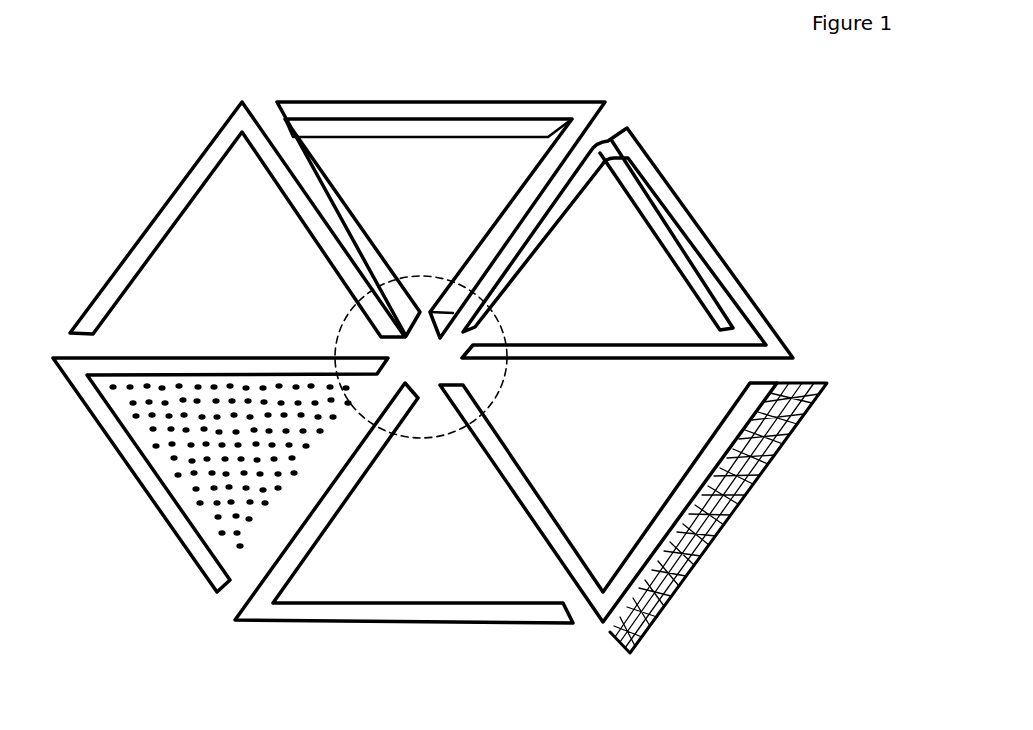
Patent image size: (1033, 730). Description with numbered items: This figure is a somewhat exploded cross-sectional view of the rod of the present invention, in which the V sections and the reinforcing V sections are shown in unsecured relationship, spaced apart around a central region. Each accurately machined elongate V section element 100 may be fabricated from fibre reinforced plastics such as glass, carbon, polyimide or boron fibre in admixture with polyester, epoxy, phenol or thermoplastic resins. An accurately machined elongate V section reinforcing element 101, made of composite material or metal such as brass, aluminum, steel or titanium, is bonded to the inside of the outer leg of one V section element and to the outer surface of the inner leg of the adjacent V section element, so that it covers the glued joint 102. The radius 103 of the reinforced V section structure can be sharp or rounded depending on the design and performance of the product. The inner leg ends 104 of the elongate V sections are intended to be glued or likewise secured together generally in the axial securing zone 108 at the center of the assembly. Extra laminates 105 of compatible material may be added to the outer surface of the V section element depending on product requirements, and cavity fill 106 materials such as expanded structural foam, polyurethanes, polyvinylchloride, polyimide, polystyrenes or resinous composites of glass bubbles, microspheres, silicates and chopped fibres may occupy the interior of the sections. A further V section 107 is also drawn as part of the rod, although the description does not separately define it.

The elongate V section element 100 is at (327, 113).
The elongate V section reinforcing element 101 is at (433, 133).
The glued joint 102 is at (610, 122).
The radius 103 is at (604, 152).
The inner leg ends 104 is at (447, 310).
The extra laminates 105 is at (720, 508).
The cavity fill 106 is at (250, 447).
The triangular frame 107 is at (256, 102).
The axial securing zone 108 is at (323, 327).